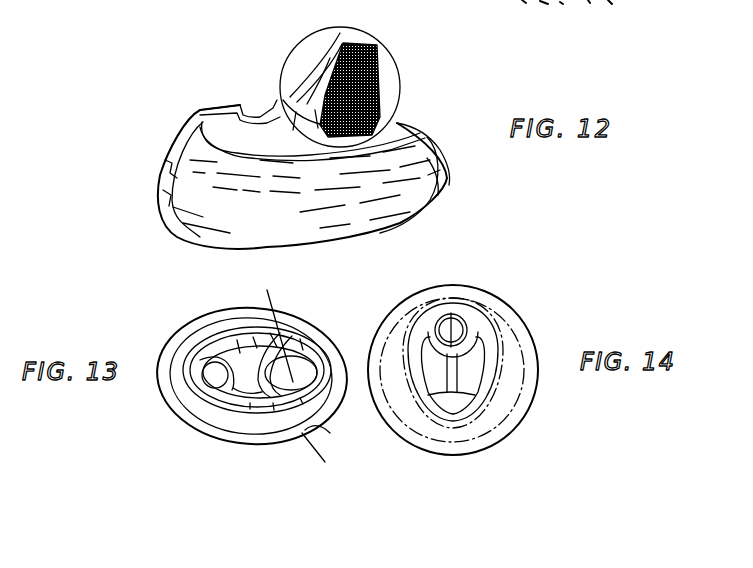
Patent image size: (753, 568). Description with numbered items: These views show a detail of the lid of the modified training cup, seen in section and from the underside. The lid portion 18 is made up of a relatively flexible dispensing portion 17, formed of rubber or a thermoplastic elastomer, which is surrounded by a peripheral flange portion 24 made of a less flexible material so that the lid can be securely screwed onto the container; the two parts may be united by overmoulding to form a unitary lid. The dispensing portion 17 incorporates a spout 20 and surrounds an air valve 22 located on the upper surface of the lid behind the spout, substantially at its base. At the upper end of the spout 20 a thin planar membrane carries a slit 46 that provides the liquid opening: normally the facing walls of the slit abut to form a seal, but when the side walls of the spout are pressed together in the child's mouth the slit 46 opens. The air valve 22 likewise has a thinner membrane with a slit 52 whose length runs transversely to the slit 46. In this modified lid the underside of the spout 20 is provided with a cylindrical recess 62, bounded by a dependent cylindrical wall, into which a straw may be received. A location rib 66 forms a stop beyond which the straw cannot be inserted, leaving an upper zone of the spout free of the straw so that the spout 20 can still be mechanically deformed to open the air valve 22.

In FIG. 12, the dispensing portion 17 is at (222, 103).
In FIG. 13, the dispensing portion 17 is at (156, 336).
In FIG. 14, the dispensing portion 17 is at (562, 317).
In FIG. 12, the lid portion 18 is at (462, 100).
In FIG. 12, the spout 20 is at (297, 43).
In FIG. 13, the air valve 22 is at (213, 377).
In FIG. 12, the peripheral flange portion 24 is at (428, 160).
In FIG. 14, the slit 46 is at (462, 330).
In FIG. 13, the slit 52 is at (212, 378).
In FIG. 12, the cylindrical recess 62 is at (400, 130).
In FIG. 12, the location rib 66 is at (380, 50).